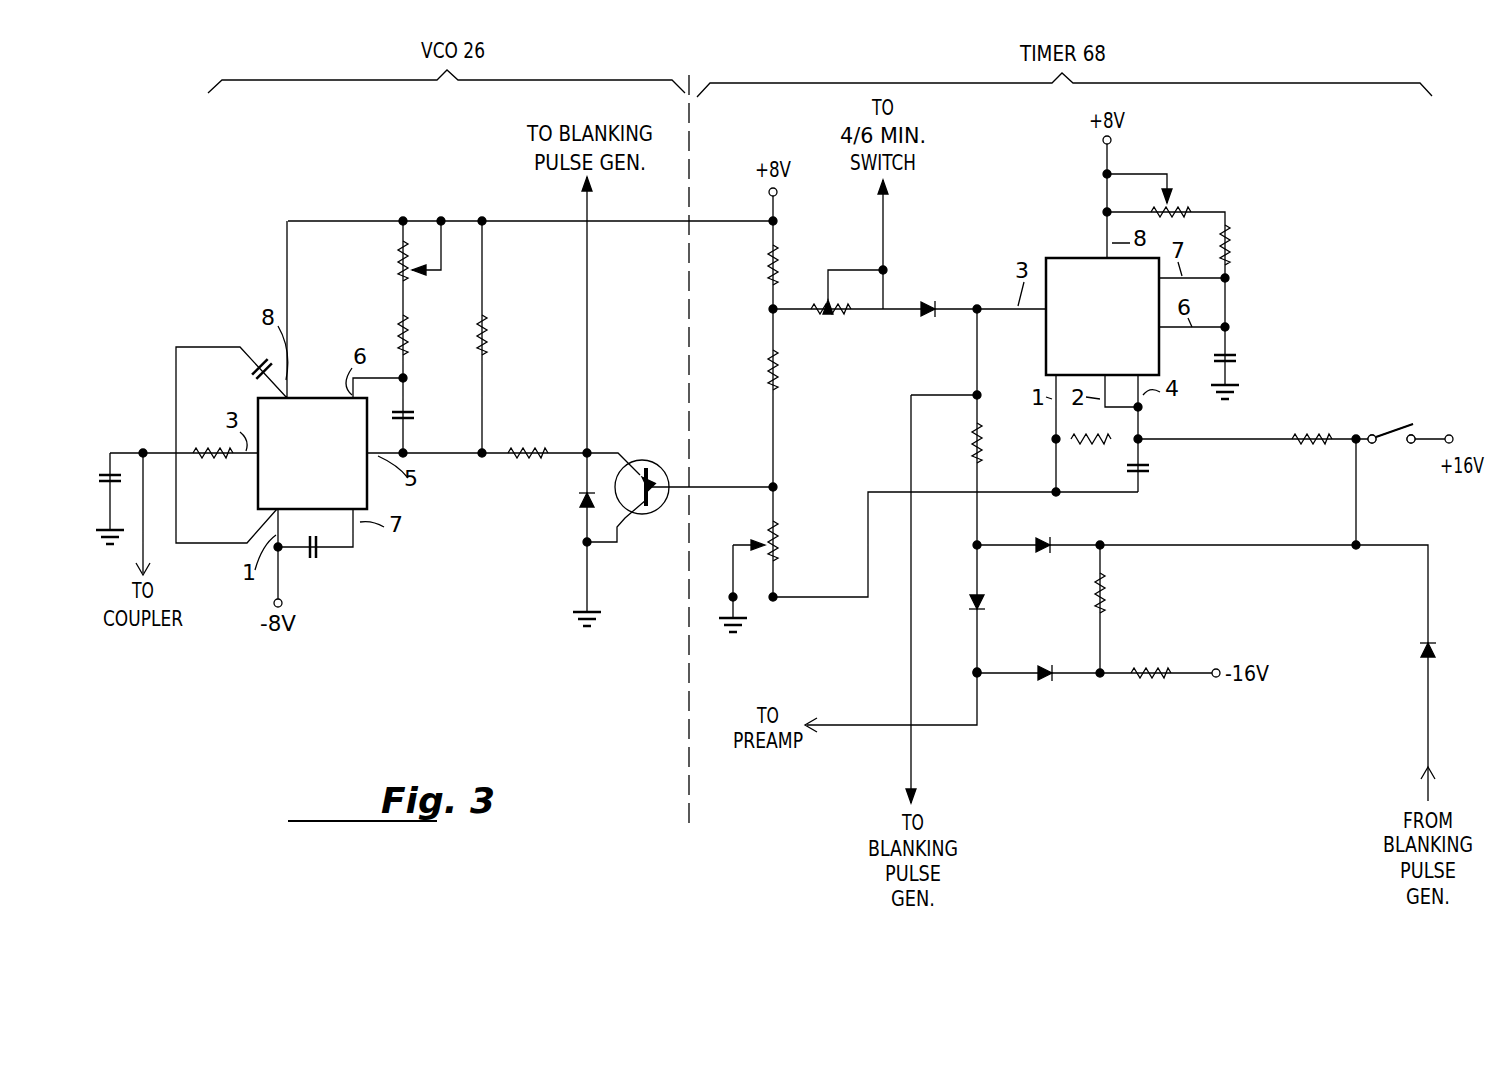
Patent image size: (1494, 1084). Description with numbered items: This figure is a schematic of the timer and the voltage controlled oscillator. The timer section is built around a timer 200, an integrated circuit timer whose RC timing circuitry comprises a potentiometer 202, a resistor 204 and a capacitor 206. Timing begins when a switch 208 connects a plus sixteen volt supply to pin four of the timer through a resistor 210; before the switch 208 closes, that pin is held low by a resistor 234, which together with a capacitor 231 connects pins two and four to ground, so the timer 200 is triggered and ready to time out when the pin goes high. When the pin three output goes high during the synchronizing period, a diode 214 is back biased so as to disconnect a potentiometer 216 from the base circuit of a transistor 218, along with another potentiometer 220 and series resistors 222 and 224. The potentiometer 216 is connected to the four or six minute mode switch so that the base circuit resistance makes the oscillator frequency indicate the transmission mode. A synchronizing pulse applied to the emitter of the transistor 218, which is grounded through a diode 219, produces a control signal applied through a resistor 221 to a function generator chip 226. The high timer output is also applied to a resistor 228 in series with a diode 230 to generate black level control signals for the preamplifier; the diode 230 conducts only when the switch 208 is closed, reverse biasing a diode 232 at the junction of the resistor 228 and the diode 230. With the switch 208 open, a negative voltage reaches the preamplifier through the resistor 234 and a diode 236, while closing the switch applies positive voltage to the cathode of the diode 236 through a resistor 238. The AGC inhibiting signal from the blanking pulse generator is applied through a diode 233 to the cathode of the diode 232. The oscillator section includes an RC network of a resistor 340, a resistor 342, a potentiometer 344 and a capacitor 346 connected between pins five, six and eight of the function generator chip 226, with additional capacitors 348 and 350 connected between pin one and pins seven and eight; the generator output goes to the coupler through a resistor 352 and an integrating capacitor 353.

The function generator chip 226 is at (298, 402).
The potentiometer 344 is at (392, 262).
The resistor 342 is at (408, 340).
The resistor 340 is at (488, 348).
The capacitor 346 is at (418, 422).
The capacitor 348 is at (253, 366).
The resistor 352 is at (226, 458).
The integrating capacitor 353 is at (103, 462).
The capacitor 350 is at (325, 552).
The resistor 221 is at (528, 448).
The diode 219 is at (580, 502).
The transistor 218 is at (640, 468).
The timer 200 is at (1078, 272).
The series resistor 224 is at (762, 264).
The series resistor 222 is at (782, 372).
The potentiometer 220 is at (780, 546).
The potentiometer 216 is at (830, 312).
The diode 214 is at (926, 302).
The resistor 228 is at (985, 445).
The diode 230 is at (988, 600).
The diode 232 is at (1052, 542).
The diode 236 is at (1040, 678).
The resistor 238 is at (1110, 598).
The resistor 234 is at (1150, 680).
The capacitor 231 is at (1143, 470).
The potentiometer 202 is at (1182, 204).
The resistor 204 is at (1235, 245).
The capacitor 206 is at (1235, 350).
The resistor 210 is at (1296, 436).
The switch 208 is at (1385, 425).
The diode 233 is at (1418, 650).